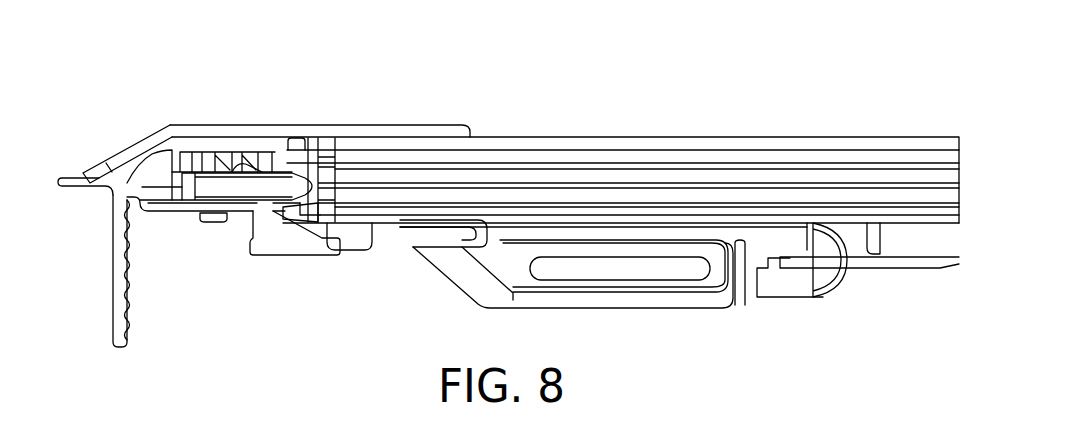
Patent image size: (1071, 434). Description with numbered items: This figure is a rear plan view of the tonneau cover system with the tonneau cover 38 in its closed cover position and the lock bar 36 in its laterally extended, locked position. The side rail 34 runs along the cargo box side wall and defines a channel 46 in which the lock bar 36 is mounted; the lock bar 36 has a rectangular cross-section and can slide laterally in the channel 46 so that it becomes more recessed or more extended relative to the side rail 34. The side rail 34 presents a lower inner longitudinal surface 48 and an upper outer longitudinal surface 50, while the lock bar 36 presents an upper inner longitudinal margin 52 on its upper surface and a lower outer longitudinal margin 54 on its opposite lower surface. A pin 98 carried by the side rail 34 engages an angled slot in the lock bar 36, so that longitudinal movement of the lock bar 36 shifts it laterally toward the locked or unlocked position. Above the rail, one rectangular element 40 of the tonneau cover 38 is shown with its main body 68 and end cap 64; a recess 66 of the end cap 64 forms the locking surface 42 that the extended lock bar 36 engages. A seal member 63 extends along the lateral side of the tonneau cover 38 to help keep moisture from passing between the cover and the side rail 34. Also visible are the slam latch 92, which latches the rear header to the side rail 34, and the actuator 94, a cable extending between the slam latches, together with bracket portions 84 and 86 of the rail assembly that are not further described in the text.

The side rail 34 is at (106, 284).
The lock bar 36 is at (178, 163).
The tonneau cover 38 is at (790, 88).
The rectangular element 40 is at (692, 130).
The locking surface 42 is at (317, 195).
The channel 46 is at (232, 165).
The lower inner longitudinal surface 48 is at (262, 167).
The upper outer longitudinal surface 50 is at (185, 202).
The upper inner longitudinal margin 52 is at (270, 168).
The lower outer longitudinal margin 54 is at (143, 186).
The seal member 63 is at (437, 126).
The end cap 64 is at (307, 165).
The recess 66 is at (318, 205).
The main body 68 is at (816, 140).
The bracket 84 is at (238, 207).
The bracket 86 is at (357, 240).
The slam latch 92 is at (668, 314).
The actuator 94 is at (888, 264).
The pin 98 is at (212, 222).